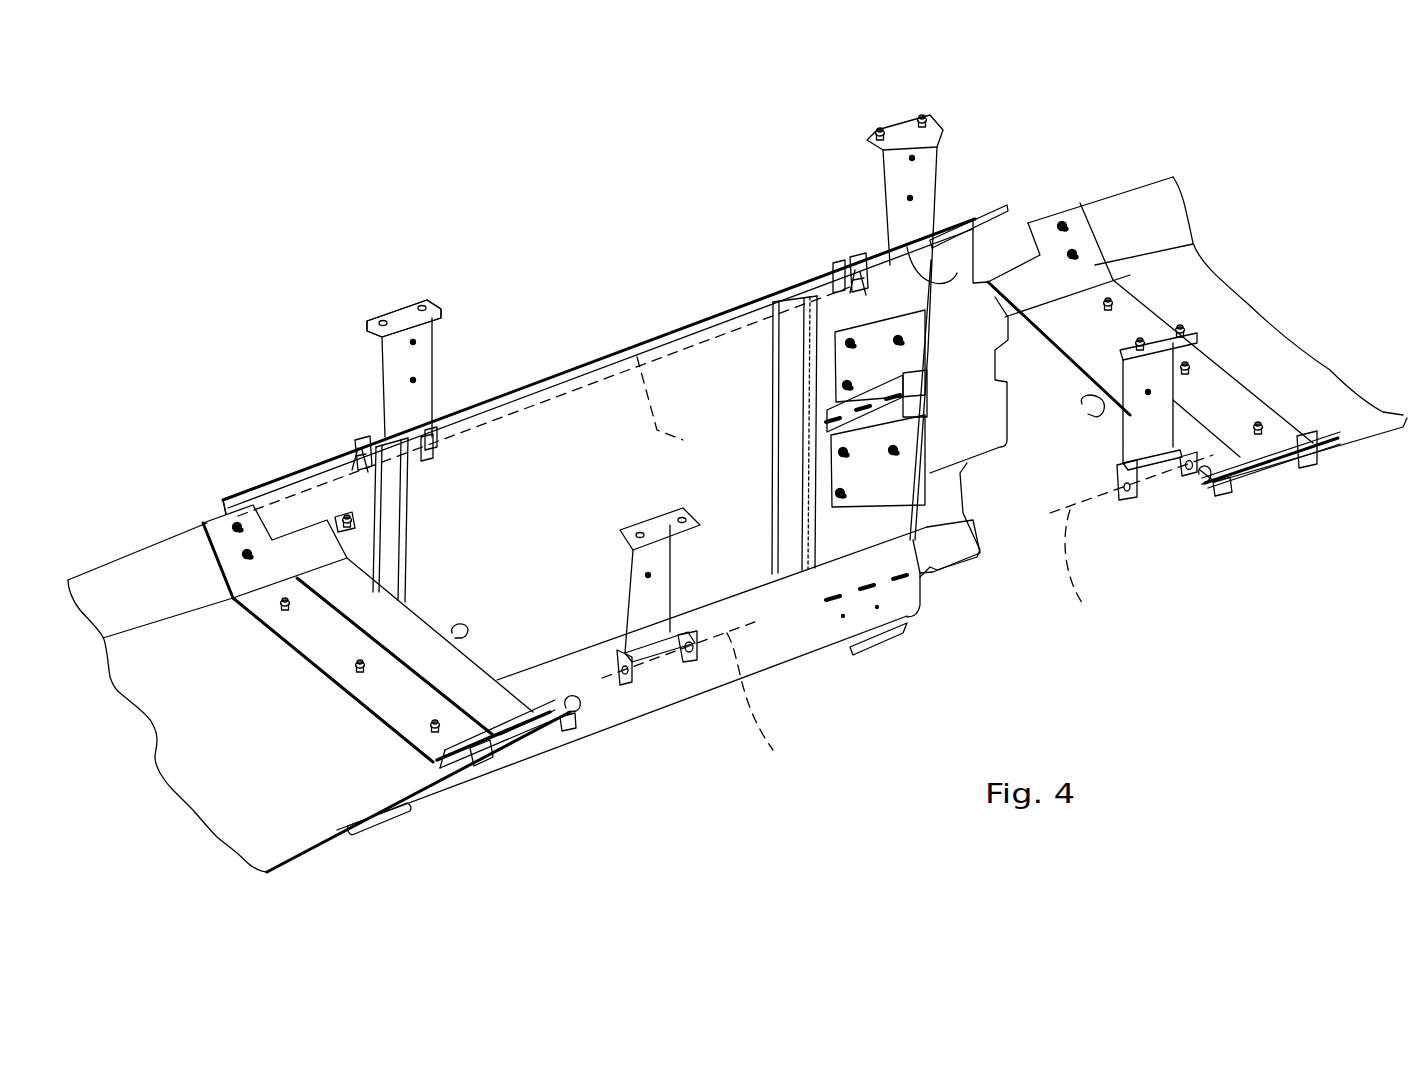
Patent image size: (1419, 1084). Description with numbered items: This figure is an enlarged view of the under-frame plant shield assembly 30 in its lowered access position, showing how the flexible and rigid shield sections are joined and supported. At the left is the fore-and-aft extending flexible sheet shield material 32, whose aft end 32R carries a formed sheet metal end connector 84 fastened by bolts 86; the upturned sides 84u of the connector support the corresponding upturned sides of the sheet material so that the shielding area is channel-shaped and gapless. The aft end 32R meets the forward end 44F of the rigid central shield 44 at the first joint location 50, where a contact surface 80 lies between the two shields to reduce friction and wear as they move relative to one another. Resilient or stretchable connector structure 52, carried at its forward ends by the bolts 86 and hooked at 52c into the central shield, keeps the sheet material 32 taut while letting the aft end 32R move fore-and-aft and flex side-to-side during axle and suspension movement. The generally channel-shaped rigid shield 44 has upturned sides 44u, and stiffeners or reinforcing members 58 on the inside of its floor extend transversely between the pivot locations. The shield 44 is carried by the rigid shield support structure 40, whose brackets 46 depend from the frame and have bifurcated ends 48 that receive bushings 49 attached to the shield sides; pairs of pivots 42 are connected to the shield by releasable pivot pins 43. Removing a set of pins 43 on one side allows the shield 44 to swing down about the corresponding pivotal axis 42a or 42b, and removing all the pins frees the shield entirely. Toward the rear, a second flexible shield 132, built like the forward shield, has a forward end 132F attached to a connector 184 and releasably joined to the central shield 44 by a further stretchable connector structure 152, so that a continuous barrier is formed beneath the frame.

The under-frame plant shield assembly 30 is at (226, 478).
The flexible sheet shield material 32 is at (219, 757).
The aft end of the shield material 32R is at (408, 795).
The shield support structure 40 is at (352, 386).
The pivots 42 is at (430, 452).
The pivotal axis 42a is at (907, 617).
The pivotal axis 42b is at (685, 406).
The releasable pivot pins 43 is at (355, 472).
The rigid central shield 44 is at (643, 310).
The upturned sides 44u is at (595, 353).
The forward end of the rigid shield 44F is at (407, 795).
The brackets 46 is at (428, 355).
The bifurcated ends 48 is at (358, 433).
The bushings 49 is at (433, 427).
The first joint location 50 is at (565, 752).
The resilient or stretchable connector structure 52 is at (527, 742).
The cylinder hook 52c is at (468, 632).
The stiffeners or reinforcing members 58 is at (407, 502).
The contact surface 80 is at (427, 612).
The formed sheet metal end connector 84 is at (318, 643).
The upturned sides of the end connector 84u is at (203, 547).
The bolts 86 is at (433, 731).
The second flexible shield 132 is at (1300, 345).
The forward end of the second flexible shield 132F is at (1220, 353).
The resilient or stretchable connector structure 152 is at (1085, 430).
The connector 184 is at (1093, 263).